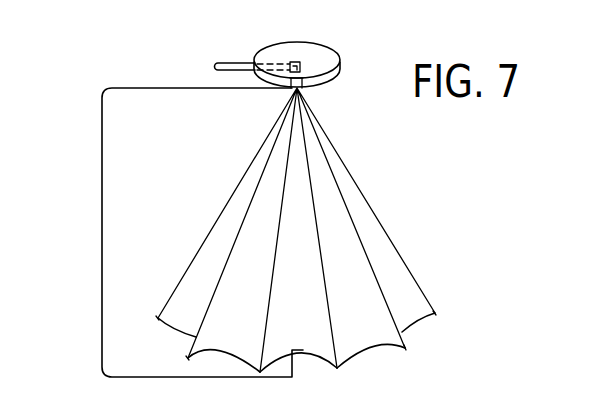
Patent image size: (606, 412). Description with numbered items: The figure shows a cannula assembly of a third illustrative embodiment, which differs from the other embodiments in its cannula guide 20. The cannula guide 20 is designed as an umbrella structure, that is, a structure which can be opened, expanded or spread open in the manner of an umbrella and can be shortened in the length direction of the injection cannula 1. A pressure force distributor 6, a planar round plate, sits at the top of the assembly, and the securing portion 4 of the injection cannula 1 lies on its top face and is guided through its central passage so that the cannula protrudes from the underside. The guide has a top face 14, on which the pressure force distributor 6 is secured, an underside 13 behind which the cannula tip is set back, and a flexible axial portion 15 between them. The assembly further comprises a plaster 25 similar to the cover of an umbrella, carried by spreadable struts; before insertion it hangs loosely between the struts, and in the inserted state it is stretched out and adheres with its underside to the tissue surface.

The injection cannula 1 is at (303, 352).
The securing portion 4 is at (225, 62).
The pressure force distributor 6 is at (333, 57).
The underside 13 is at (236, 359).
The top face 14 is at (287, 54).
The flexible axial portion 15 is at (103, 220).
The cannula guide 20 is at (408, 196).
The plaster 25 is at (417, 304).